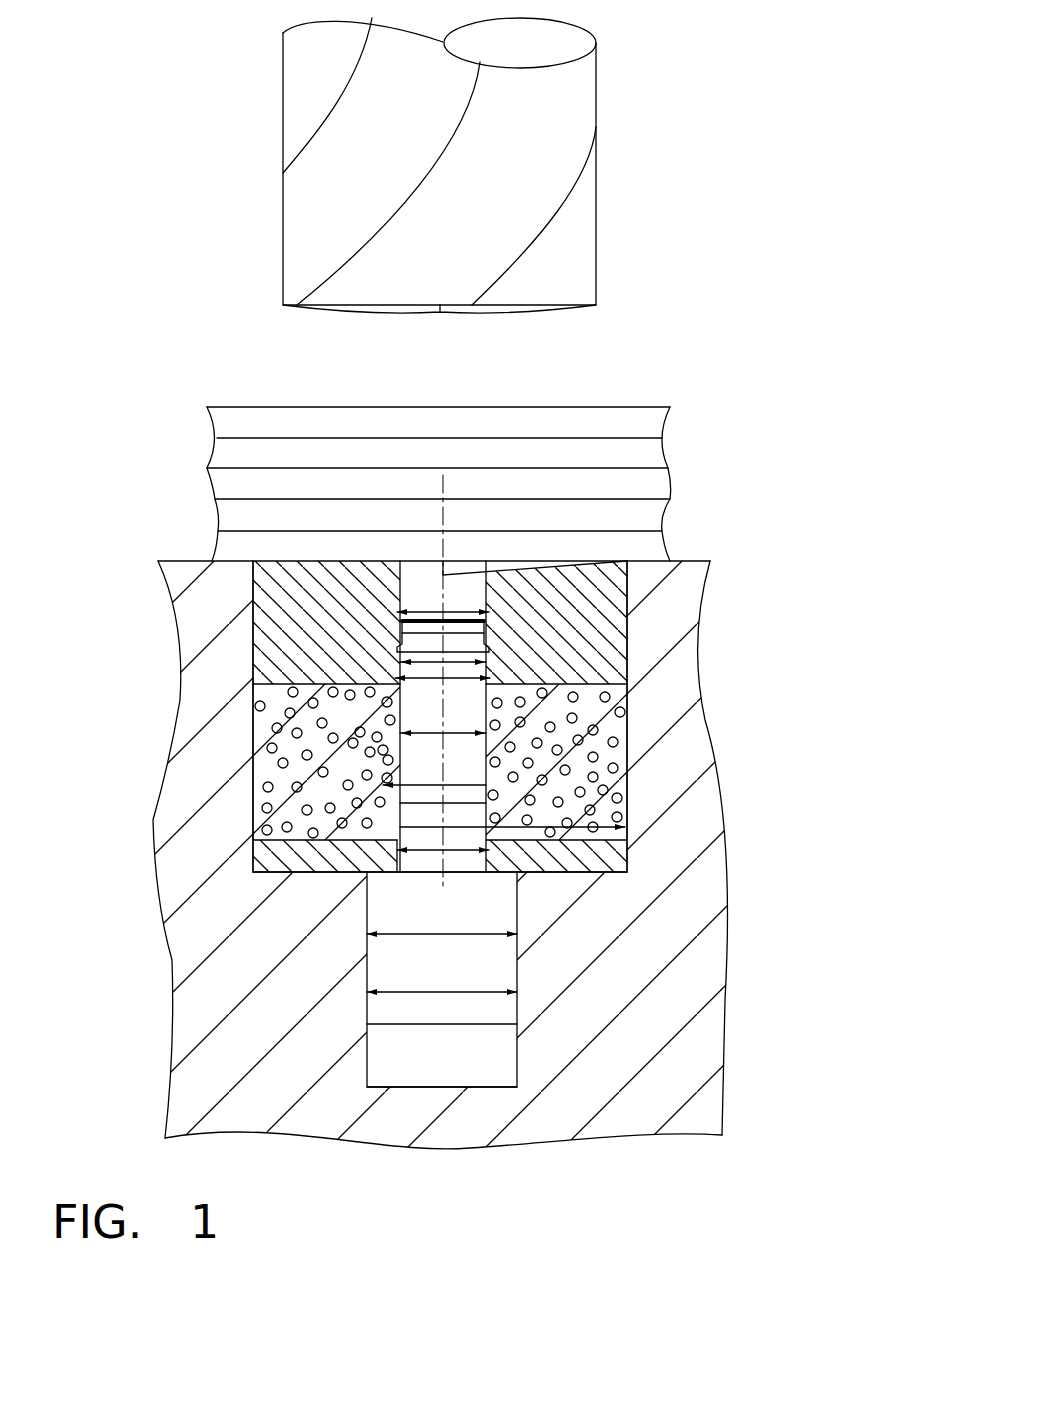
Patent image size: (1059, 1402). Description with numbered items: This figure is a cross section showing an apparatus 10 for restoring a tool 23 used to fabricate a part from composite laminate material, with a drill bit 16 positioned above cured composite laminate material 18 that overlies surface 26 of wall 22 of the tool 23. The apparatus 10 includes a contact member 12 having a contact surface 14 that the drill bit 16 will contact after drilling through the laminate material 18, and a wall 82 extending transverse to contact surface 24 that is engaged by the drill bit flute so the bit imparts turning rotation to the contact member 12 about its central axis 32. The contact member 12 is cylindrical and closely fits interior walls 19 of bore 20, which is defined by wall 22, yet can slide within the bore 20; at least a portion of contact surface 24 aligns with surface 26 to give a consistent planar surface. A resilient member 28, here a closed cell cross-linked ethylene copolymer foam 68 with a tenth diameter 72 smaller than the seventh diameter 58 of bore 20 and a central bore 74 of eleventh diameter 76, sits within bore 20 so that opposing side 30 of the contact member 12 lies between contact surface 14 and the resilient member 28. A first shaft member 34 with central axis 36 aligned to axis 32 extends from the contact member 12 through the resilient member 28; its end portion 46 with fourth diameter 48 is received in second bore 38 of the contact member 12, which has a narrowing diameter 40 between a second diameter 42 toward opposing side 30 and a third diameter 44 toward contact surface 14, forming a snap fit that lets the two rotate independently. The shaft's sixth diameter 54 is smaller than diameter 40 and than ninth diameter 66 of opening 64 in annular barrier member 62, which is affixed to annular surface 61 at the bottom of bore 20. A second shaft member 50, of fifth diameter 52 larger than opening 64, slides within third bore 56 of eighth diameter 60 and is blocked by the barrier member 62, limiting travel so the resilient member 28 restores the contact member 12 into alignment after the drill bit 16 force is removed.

The apparatus 10 is at (627, 648).
The contact member 12 is at (363, 560).
The contact surface 14 is at (315, 557).
The drill bit 16 is at (533, 163).
The cured composite laminate material 18 is at (287, 466).
The interior walls 19 is at (262, 602).
The bore 20 is at (256, 736).
The wall 22 is at (200, 946).
The tool 23 is at (161, 1044).
The contact surface 24 is at (273, 558).
The surface 26 is at (188, 560).
The resilient member 28 is at (256, 778).
The opposing side 30 is at (256, 712).
The central axis 32 is at (443, 517).
The first shaft member 34 is at (520, 872).
The central axis 36 is at (438, 713).
The second bore 38 is at (354, 642).
The diameter 40 is at (452, 662).
The second diameter 42 is at (495, 680).
The third diameter 44 is at (455, 615).
The end portion 46 is at (384, 614).
The fourth diameter 48 is at (368, 647).
The second shaft member 50 is at (450, 1008).
The fifth diameter 52 is at (490, 990).
The sixth diameter 54 is at (455, 780).
The third bore 56 is at (495, 1074).
The seventh diameter 58 is at (612, 800).
The eighth diameter 60 is at (460, 937).
The annular surface 61 is at (310, 873).
The barrier member 62 is at (343, 873).
The opening 64 is at (470, 878).
The ninth diameter 66 is at (440, 862).
The closed cell cross-linked ethylene copolymer foam 68 is at (256, 744).
The tenth diameter 72 is at (258, 862).
The central bore 74 is at (398, 742).
The eleventh diameter 76 is at (458, 710).
The wall 82 is at (443, 565).